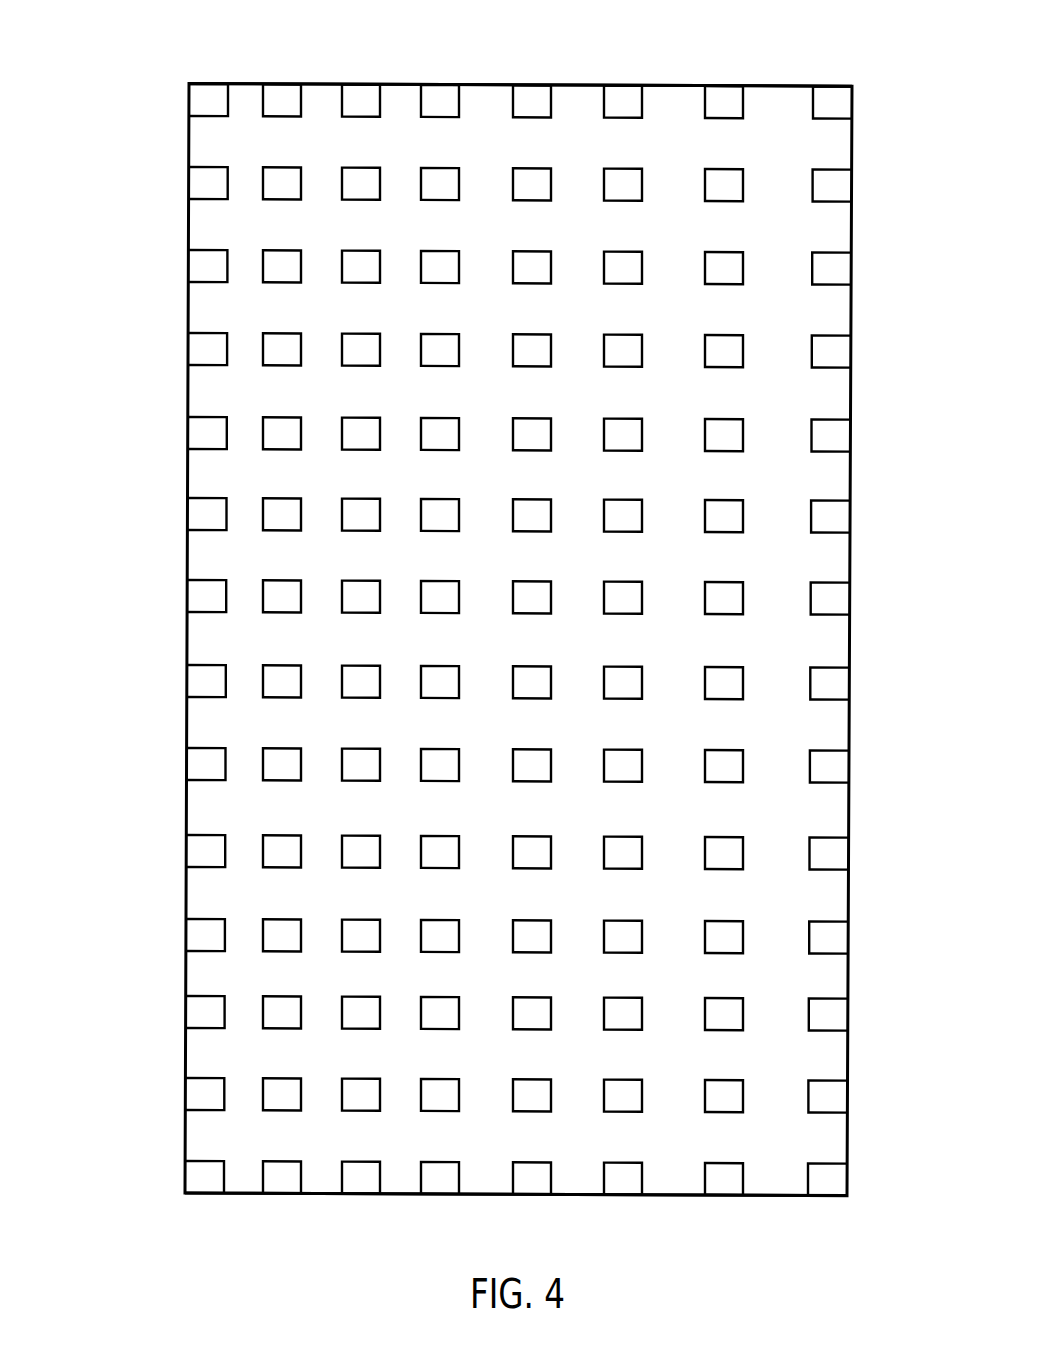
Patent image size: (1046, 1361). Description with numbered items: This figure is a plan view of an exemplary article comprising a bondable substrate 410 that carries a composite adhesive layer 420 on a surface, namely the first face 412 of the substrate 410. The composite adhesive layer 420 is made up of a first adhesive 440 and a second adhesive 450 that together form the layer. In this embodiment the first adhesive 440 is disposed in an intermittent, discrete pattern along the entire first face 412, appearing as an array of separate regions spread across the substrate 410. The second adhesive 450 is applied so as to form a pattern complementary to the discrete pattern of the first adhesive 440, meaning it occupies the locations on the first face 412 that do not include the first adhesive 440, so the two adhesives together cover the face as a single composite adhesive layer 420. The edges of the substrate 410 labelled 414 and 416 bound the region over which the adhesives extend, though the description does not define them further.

The bondable substrate 410 is at (503, 633).
The first face 412 is at (503, 611).
The first edge 414 is at (340, 84).
The second edge 416 is at (583, 1196).
The composite adhesive layer 420 is at (574, 639).
The first adhesive 440 is at (530, 515).
The second adhesive 450 is at (773, 896).